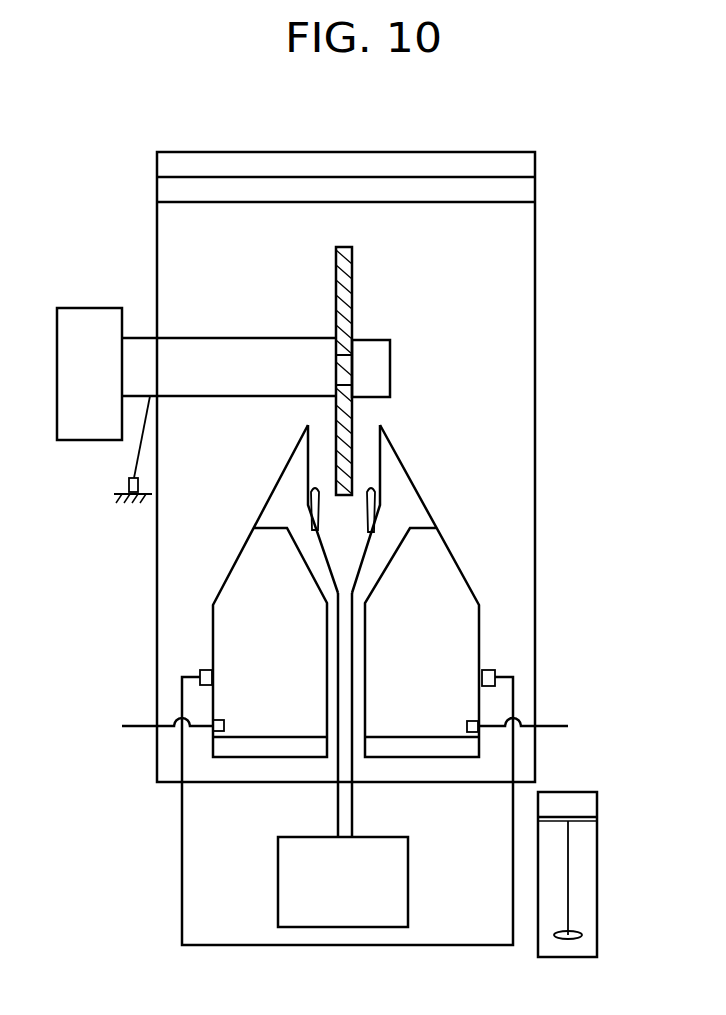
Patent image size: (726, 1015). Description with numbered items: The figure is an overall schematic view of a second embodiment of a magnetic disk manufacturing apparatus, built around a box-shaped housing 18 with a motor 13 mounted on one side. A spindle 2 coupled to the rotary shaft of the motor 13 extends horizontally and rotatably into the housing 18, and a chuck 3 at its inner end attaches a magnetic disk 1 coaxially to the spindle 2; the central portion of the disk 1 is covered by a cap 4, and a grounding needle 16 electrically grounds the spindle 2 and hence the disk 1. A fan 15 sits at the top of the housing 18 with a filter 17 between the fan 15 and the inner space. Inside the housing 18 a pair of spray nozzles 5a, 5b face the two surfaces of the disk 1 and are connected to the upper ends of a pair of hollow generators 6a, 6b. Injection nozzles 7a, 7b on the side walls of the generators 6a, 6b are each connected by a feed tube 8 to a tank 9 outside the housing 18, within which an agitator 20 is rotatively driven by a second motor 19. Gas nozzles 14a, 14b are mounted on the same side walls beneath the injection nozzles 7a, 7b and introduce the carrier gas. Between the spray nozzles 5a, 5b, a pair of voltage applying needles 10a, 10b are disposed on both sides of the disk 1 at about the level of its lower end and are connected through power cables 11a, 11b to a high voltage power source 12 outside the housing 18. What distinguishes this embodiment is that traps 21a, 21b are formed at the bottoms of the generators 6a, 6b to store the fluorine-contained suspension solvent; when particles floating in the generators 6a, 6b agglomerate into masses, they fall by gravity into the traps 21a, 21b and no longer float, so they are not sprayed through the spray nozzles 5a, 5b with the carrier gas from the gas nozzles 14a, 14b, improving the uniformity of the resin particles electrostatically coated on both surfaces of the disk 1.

The magnetic disk 1 is at (347, 266).
The spindle 2 is at (214, 356).
The chuck 3 is at (345, 362).
The cap 4 is at (380, 370).
The spray nozzle 5a is at (392, 470).
The spray nozzle 5b is at (290, 475).
The generator 6a is at (416, 598).
The generator 6b is at (270, 608).
The injection nozzle 7a is at (490, 670).
The injection nozzle 7b is at (200, 672).
The feed tube 8 is at (180, 858).
The tank 9 is at (598, 940).
The voltage applying needle 10a is at (376, 506).
The voltage applying needle 10b is at (310, 506).
The power cable 11a is at (353, 812).
The power cable 11b is at (337, 812).
The high voltage power source 12 is at (410, 884).
The motor 13 is at (80, 318).
The gas nozzle 14a is at (476, 724).
The gas nozzle 14b is at (214, 722).
The fan 15 is at (512, 160).
The grounding needle 16 is at (128, 488).
The filter 17 is at (525, 190).
The housing 18 is at (538, 300).
The second motor 19 is at (590, 802).
The agitator 20 is at (570, 880).
The trap 21a is at (406, 748).
The trap 21b is at (266, 748).